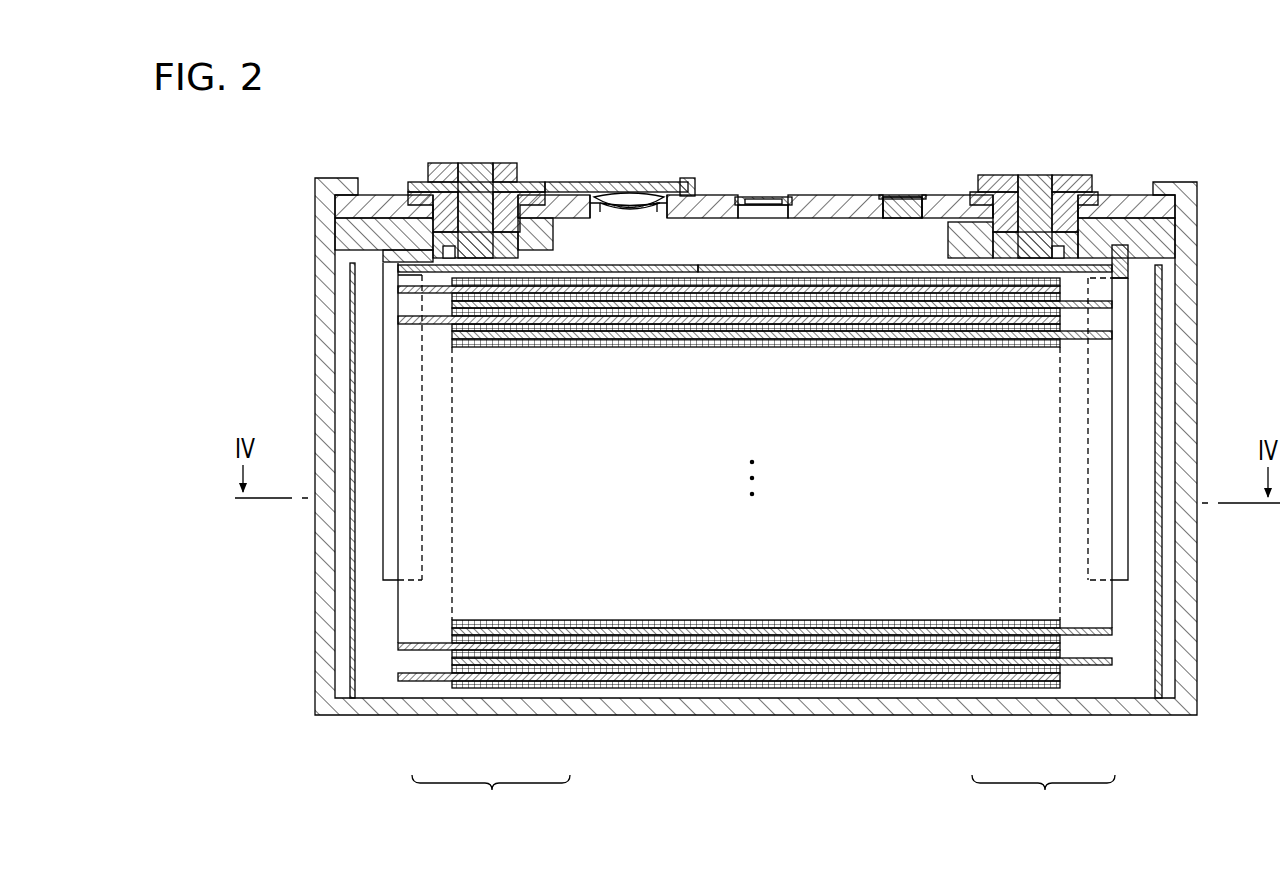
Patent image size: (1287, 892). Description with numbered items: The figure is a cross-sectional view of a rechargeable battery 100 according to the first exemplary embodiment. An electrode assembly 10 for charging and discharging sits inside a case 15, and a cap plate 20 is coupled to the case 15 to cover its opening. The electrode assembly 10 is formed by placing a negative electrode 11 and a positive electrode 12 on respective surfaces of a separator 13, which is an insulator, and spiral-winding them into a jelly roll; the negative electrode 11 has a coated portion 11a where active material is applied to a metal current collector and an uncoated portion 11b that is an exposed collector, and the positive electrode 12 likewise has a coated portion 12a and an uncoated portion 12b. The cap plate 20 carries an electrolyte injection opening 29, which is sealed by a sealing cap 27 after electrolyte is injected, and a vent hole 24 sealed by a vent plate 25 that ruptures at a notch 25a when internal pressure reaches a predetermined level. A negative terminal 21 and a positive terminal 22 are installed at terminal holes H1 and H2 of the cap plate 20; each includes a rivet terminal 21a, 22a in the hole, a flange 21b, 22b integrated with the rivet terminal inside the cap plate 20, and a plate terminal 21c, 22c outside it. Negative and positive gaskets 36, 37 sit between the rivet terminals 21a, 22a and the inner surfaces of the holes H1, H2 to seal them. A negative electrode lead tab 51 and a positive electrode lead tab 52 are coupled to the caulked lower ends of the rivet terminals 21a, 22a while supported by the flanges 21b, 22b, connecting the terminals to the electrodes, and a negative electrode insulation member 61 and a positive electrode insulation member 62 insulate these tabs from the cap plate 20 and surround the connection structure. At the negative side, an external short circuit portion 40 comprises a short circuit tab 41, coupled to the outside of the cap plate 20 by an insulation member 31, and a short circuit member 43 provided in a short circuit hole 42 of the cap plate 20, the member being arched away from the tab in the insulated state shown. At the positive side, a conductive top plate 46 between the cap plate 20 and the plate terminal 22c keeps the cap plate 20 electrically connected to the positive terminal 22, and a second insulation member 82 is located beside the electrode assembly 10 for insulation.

The rechargeable battery 100 is at (780, 80).
The electrode assembly 10 is at (756, 530).
The first electrode (negative electrode) 11 is at (491, 794).
The coated portion 11a is at (550, 677).
The uncoated portion 11b is at (425, 682).
The second electrode (positive electrode) 12 is at (1043, 794).
The coated portion 12a is at (982, 664).
The uncoated portion 12b is at (1097, 668).
The separator 13 is at (770, 686).
The case 15 is at (1188, 383).
The cap plate 20 is at (835, 195).
The first electrode terminal (negative terminal) 21 is at (477, 158).
The rivet terminal 21a is at (480, 274).
The flange 21b is at (545, 182).
The plate terminal 21c is at (503, 162).
The second electrode terminal (positive terminal) 22 is at (1036, 170).
The rivet terminal 22a is at (1050, 268).
The flange 22b is at (995, 238).
The plate terminal 22c is at (1085, 178).
The vent hole 24 is at (760, 218).
The vent plate 25 is at (790, 197).
The notch 25a is at (752, 198).
The sealing cap 27 is at (905, 197).
The electrolyte injection opening 29 is at (895, 195).
The insulation member 31 is at (688, 178).
The negative gasket 36 is at (412, 196).
The positive gasket 37 is at (1000, 192).
The external short circuit portion 40 is at (630, 177).
The short circuit tab 41 is at (588, 182).
The short circuit hole 42 is at (655, 214).
The short circuit member 43 is at (602, 210).
The conductive top plate 46 is at (1095, 203).
The negative electrode lead tab 51 is at (381, 394).
The positive electrode lead tab 52 is at (1133, 545).
The negative electrode insulation member 61 is at (340, 232).
The positive electrode insulation member 62 is at (1176, 240).
The second insulation member 82 is at (1162, 335).
The terminal hole H1 is at (440, 194).
The terminal hole H2 is at (1045, 192).